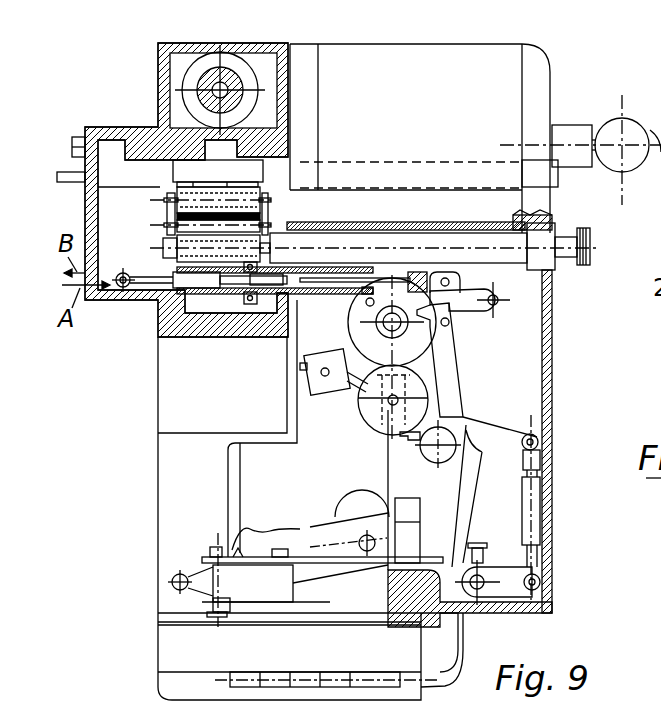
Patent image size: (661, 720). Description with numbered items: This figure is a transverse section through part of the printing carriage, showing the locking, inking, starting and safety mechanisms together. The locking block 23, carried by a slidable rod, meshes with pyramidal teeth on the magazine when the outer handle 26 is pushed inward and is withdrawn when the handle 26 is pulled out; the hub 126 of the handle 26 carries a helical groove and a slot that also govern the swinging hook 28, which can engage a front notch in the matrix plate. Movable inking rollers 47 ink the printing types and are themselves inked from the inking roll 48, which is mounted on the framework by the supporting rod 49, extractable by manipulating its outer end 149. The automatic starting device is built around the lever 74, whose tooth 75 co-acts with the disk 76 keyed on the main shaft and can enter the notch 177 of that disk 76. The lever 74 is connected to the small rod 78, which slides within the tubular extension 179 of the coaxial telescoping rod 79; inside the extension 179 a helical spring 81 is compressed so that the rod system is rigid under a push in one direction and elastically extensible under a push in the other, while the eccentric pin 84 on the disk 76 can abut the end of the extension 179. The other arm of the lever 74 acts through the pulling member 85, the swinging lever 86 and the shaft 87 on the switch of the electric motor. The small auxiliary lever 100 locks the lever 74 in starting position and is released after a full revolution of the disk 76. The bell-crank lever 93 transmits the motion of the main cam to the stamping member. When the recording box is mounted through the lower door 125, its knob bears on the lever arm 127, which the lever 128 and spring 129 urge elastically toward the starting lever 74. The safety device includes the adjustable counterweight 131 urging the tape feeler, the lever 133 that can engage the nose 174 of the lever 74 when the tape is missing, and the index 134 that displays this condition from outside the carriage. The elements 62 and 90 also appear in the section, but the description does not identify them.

The block 23 is at (78, 137).
The outer handle 26 is at (627, 118).
The hook 28 is at (75, 182).
The inking rollers 47 is at (267, 204).
The inking roll 48 is at (186, 250).
The supporting rod 49 is at (425, 243).
The cylinder 62 is at (246, 83).
The lever 74 is at (458, 465).
The tooth 75 is at (450, 322).
The disk 76 is at (413, 347).
The rod 78 is at (383, 278).
The telescoping rod 79 is at (162, 283).
The helical spring 81 is at (312, 272).
The eccentric pin 84 is at (367, 305).
The pulling member 85 is at (532, 498).
The swinging lever 86 is at (500, 573).
The shaft 87 is at (476, 588).
The bearing block 90 is at (207, 170).
The bell-crank lever 93 is at (284, 537).
The auxiliary lever 100 is at (468, 290).
The lower door 125 is at (370, 688).
The hub 126 is at (566, 130).
The lever arm 127 is at (325, 562).
The lever 128 is at (248, 586).
The spring 129 is at (177, 582).
The adjustable counterweight 131 is at (316, 385).
The lever 133 is at (405, 437).
The index 134 is at (386, 402).
The outer end 149 is at (568, 258).
The nose 174 is at (397, 452).
The notch 177 is at (432, 332).
The tubular extension 179 is at (237, 293).